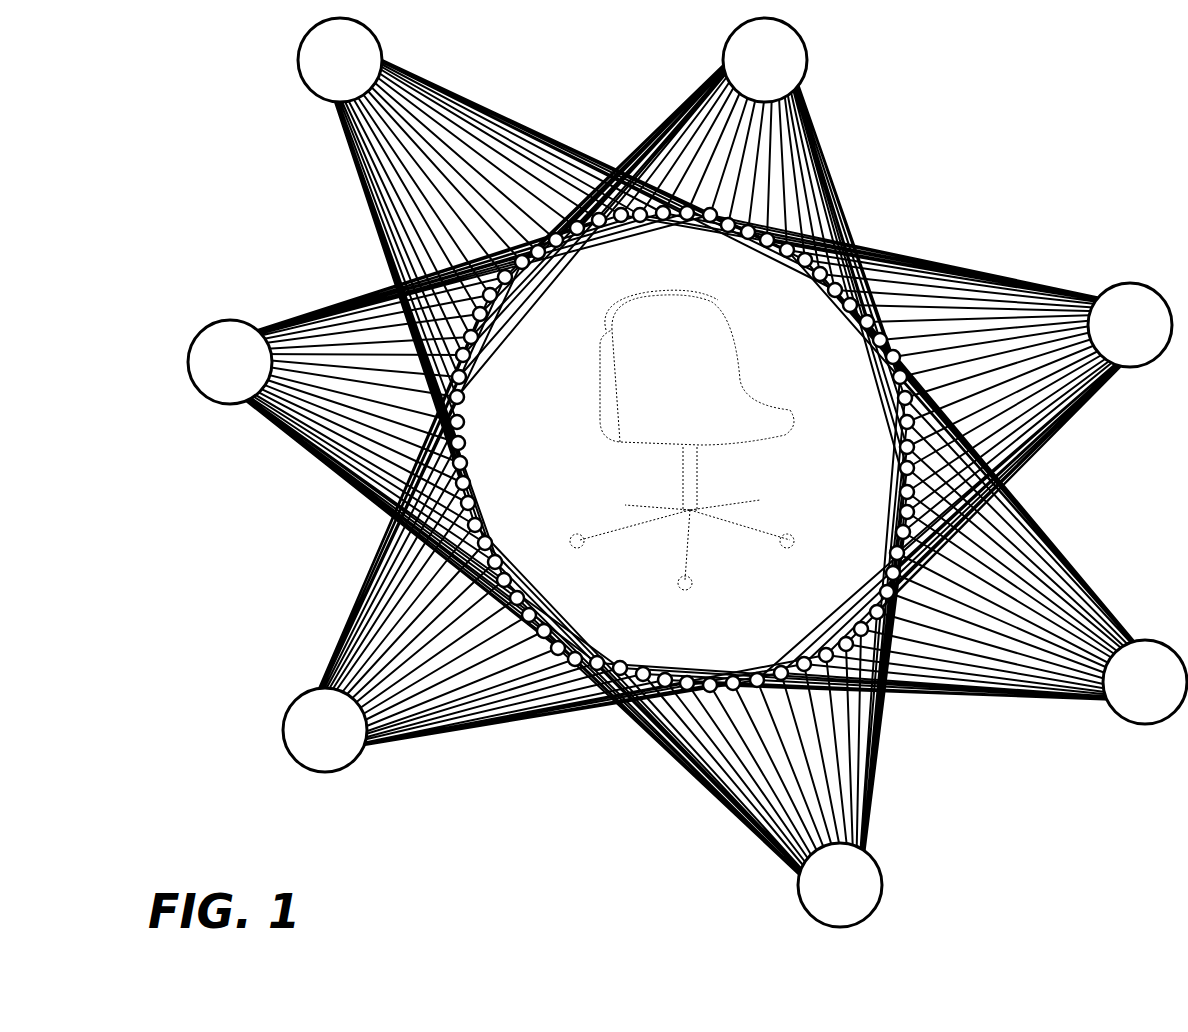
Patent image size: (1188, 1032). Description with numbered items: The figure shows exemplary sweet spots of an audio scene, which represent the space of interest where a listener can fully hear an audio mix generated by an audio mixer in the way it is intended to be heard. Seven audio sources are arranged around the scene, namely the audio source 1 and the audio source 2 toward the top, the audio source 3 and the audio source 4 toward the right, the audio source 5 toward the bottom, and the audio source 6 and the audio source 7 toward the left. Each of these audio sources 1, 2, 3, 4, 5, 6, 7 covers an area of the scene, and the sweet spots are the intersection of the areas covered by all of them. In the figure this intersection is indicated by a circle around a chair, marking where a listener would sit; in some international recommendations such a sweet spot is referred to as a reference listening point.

The audio source 1 is at (566, 299).
The audio source 2 is at (682, 255).
The audio source 3 is at (896, 446).
The audio source 4 is at (892, 487).
The audio source 5 is at (691, 652).
The audio source 6 is at (554, 517).
The audio source 7 is at (449, 440).